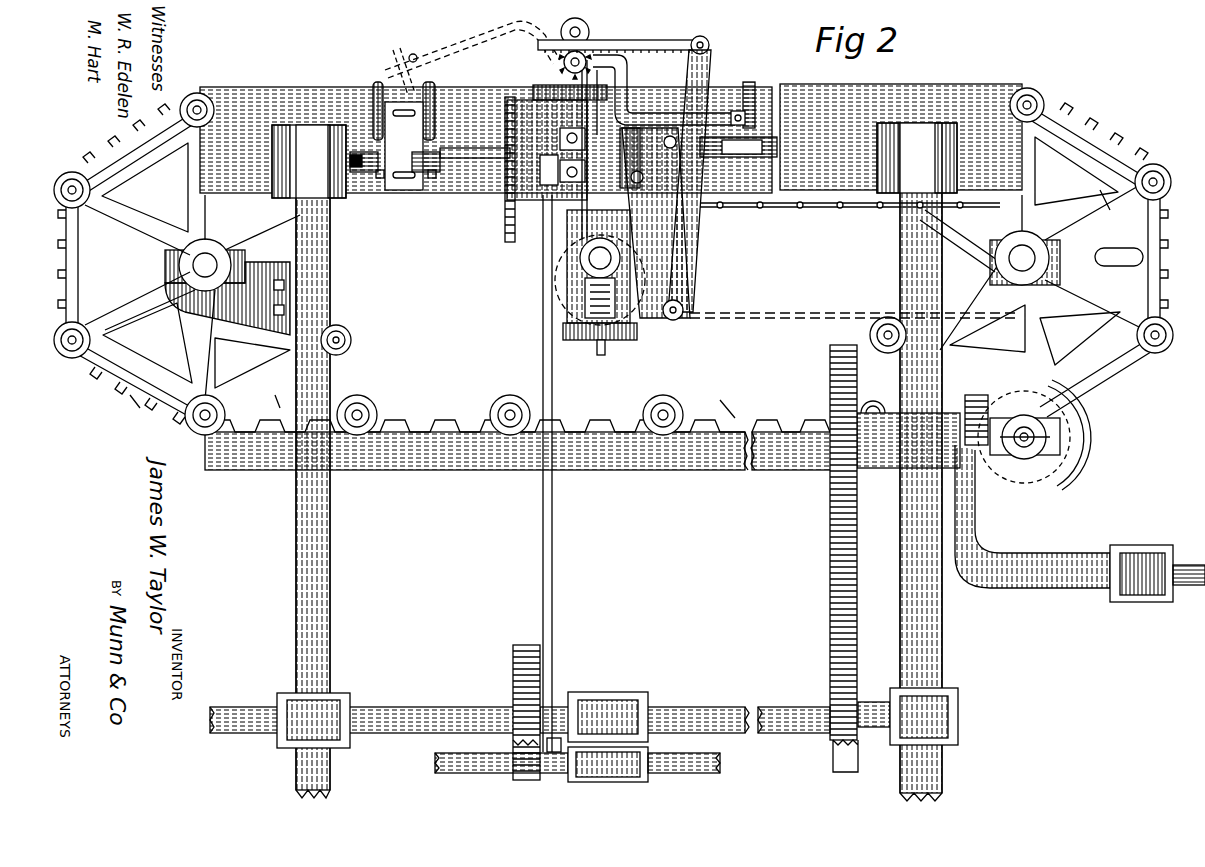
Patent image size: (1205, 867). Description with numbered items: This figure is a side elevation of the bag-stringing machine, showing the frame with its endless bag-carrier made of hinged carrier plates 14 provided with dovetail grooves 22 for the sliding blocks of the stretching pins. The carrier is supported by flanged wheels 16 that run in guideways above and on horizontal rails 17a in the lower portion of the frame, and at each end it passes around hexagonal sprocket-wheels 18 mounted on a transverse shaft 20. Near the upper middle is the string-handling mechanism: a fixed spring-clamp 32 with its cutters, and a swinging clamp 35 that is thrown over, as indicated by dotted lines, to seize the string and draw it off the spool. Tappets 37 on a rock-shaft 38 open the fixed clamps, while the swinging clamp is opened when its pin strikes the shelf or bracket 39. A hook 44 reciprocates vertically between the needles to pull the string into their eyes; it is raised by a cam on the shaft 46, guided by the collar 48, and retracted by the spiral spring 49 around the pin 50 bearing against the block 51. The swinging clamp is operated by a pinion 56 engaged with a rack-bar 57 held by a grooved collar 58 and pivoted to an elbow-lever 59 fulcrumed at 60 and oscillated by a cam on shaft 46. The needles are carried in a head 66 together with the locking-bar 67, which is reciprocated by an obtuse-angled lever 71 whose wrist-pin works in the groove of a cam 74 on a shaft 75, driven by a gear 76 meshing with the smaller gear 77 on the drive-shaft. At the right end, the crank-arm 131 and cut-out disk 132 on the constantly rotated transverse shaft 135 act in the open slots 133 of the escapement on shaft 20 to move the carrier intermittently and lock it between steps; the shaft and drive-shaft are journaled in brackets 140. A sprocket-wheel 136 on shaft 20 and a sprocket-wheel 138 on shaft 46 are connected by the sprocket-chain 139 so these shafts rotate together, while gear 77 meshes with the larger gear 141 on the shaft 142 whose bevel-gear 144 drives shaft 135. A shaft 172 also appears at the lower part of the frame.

The carrier plates 14 is at (609, 266).
The flanged wheels 16 is at (200, 93).
The rails 17a is at (490, 470).
The sprocket-wheels 18 is at (168, 160).
The shaft 20 is at (210, 258).
The dovetail grooves 22 is at (618, 425).
The spring-clamp 32 is at (432, 100).
The swinging clamp 35 is at (385, 74).
The tappets 37 is at (365, 152).
The rock-shaft 38 is at (498, 158).
The shelf or bracket 39 is at (750, 158).
The hook 44 is at (669, 90).
The shaft 46 is at (580, 260).
The collar 48 is at (656, 223).
The spiral spring 49 is at (608, 338).
The pin 50 is at (598, 352).
The block 51 is at (585, 288).
The pinion 56 is at (562, 52).
The rack-bar 57 is at (690, 40).
The grooved collar 58 is at (584, 23).
The elbow-lever 59 is at (700, 68).
The fulcrum 60 is at (675, 320).
The head or cross-bar 66 is at (540, 88).
The locking-bar 67 is at (512, 97).
The obtuse-angled lever 71 is at (552, 602).
The cam 74 is at (523, 712).
The shaft 75 is at (432, 707).
The gear 76 is at (831, 719).
The gear 77 is at (832, 578).
The crank-arm 131 is at (1062, 422).
The cut-out disk 132 is at (1072, 458).
The open slots 133 is at (592, 280).
The transverse shaft 135 is at (1048, 440).
The sprocket-wheel 136 is at (975, 225).
The sprocket-wheel 138 is at (560, 288).
The sprocket-chain 139 is at (770, 208).
The brackets 140 is at (1088, 512).
The gear 141 is at (831, 366).
The shaft 142 is at (880, 400).
The bevel-gear 144 is at (968, 395).
The shaft 172 is at (577, 764).